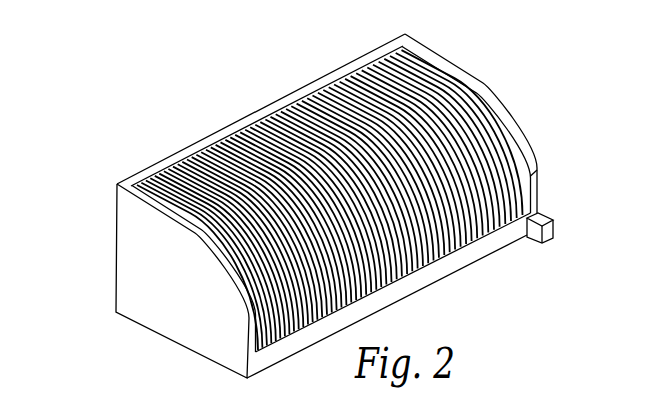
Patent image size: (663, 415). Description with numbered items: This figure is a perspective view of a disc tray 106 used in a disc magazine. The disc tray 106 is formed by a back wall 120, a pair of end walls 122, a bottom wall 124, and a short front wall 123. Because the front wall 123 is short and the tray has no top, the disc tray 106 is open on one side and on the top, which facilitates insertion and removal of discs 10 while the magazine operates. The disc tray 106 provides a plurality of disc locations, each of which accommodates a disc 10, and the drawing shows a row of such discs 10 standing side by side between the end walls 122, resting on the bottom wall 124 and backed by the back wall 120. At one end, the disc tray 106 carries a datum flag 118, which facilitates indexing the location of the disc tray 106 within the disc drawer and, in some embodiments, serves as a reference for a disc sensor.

The disc 10 is at (452, 78).
The disc tray 106 is at (312, 206).
The datum flag 118 is at (546, 207).
The back wall 120 is at (243, 125).
The end wall 122 is at (176, 305).
The short front wall 123 is at (490, 245).
The bottom wall 124 is at (458, 268).